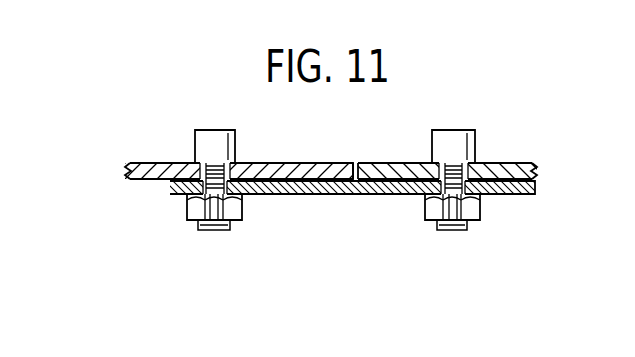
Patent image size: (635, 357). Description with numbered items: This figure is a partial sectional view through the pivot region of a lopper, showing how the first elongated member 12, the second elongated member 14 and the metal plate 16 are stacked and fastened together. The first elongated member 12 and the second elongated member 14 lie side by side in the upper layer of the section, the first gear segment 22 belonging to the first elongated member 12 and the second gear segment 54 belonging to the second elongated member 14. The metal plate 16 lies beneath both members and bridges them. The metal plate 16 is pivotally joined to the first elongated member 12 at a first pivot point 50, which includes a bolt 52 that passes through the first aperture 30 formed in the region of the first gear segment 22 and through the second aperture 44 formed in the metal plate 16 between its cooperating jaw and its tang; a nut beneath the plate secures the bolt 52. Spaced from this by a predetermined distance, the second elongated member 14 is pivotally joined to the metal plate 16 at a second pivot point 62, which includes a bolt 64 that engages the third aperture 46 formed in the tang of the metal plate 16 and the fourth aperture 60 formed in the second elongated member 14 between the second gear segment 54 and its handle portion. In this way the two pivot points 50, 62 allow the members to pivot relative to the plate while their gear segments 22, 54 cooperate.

The first elongated member 12 is at (500, 166).
The second elongated member 14 is at (160, 166).
The metal plate 16 is at (520, 196).
The first gear segment 22 is at (372, 168).
The first aperture 30 is at (446, 168).
The second aperture 44 is at (446, 201).
The third aperture 46 is at (210, 201).
The first pivot point 50 is at (415, 177).
The bolt 52 is at (456, 133).
The second gear segment 54 is at (282, 167).
The fourth aperture 60 is at (210, 166).
The second pivot point 62 is at (186, 175).
The bolt 64 is at (218, 135).